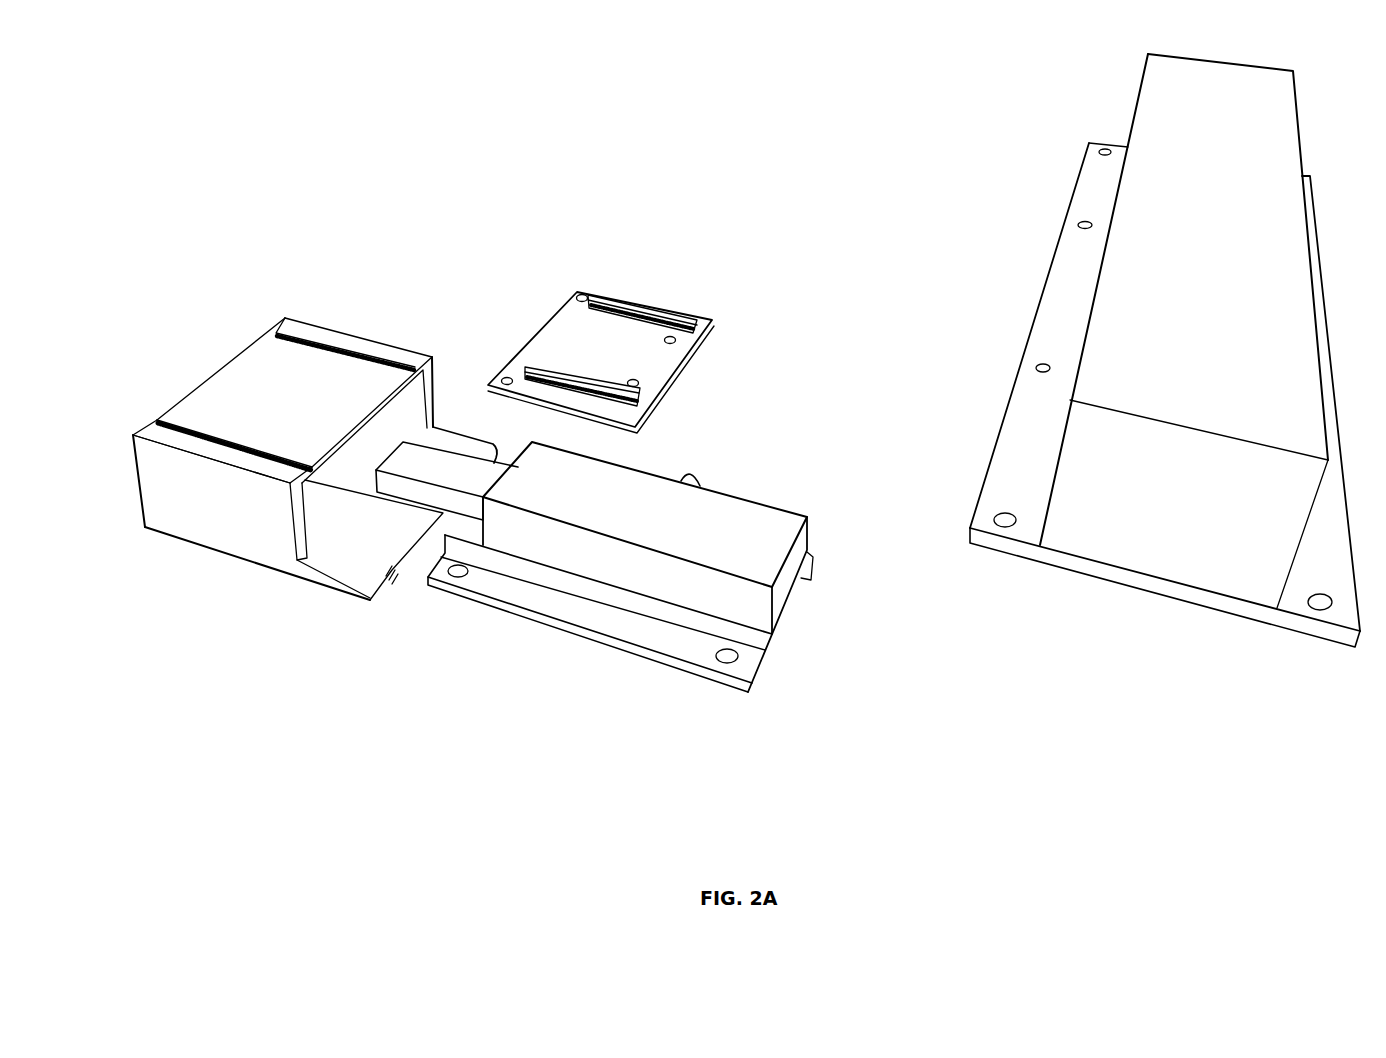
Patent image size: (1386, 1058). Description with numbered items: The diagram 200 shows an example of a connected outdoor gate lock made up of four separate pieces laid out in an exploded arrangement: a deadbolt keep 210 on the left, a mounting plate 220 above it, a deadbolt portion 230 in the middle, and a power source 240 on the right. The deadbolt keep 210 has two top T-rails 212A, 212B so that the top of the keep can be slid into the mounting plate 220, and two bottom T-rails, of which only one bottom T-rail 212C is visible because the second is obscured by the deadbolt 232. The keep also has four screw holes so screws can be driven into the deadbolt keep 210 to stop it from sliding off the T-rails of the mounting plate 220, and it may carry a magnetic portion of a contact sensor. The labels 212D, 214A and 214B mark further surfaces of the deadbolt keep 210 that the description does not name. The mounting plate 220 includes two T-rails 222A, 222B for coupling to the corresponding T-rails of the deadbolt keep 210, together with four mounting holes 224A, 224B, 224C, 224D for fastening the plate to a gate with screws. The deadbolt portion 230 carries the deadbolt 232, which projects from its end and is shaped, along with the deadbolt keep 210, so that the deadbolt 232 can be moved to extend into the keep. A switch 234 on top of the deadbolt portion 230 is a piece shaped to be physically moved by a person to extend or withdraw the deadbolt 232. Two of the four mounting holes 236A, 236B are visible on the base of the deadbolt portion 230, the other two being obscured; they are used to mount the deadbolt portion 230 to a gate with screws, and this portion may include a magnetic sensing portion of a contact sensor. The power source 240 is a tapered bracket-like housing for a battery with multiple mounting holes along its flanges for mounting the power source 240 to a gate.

The diagram 200 is at (346, 59).
The deadbolt keep 210 is at (322, 322).
The top T-rail 212A is at (415, 362).
The top T-rail 212B is at (262, 447).
The bottom T-rail 212C is at (255, 474).
The bottom wall of housing 212D is at (262, 562).
The lower front face of housing 214A is at (180, 534).
The upper front face of housing 214B is at (165, 450).
The mounting plate 220 is at (565, 305).
The T-rail 222A is at (655, 308).
The T-rail 222B is at (577, 373).
The mounting hole 224A is at (680, 338).
The mounting hole 224B is at (640, 383).
The mounting hole 224C is at (582, 297).
The mounting hole 224D is at (503, 387).
The deadbolt portion 230 is at (548, 627).
The deadbolt 232 is at (403, 498).
The switch 234 is at (698, 480).
The mounting hole 236A is at (720, 657).
The mounting hole 236B is at (455, 575).
The power source 240 is at (1040, 287).